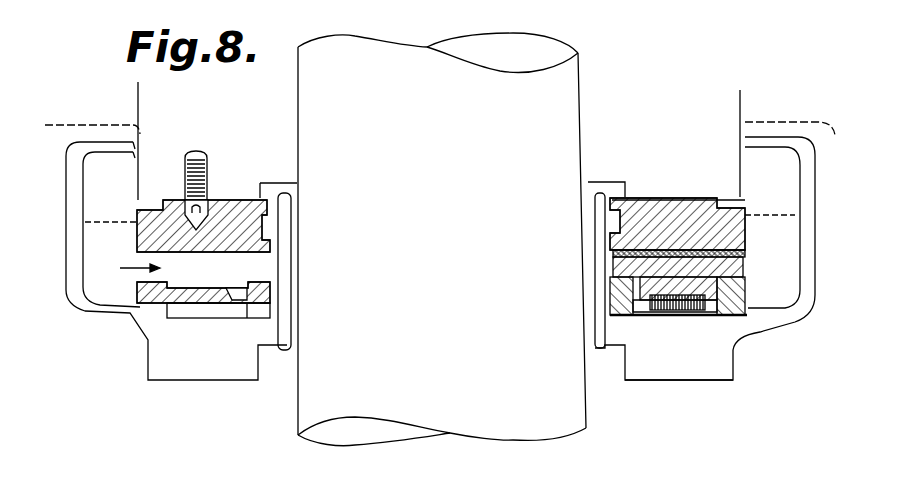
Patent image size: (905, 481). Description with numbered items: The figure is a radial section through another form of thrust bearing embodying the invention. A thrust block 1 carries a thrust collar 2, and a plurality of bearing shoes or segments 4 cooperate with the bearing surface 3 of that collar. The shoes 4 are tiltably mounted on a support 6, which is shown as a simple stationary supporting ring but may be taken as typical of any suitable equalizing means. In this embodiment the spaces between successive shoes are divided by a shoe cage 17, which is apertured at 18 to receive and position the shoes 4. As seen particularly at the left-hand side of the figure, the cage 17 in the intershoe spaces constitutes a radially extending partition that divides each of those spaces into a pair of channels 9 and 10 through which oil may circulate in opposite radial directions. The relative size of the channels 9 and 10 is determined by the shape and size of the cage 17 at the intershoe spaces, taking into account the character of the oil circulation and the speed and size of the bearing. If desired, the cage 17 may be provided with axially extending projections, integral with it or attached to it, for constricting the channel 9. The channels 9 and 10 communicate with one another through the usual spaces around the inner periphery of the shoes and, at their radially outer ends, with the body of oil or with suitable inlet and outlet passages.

The thrust block 1 is at (724, 121).
The thrust collar 2 is at (225, 205).
The bearing surface 3 is at (660, 199).
The bearing shoe 4 is at (742, 247).
The support 6 is at (683, 352).
The channel 9 is at (771, 260).
The channel 10 is at (203, 320).
The shoe cage 17 is at (196, 290).
The aperture 18 is at (732, 311).